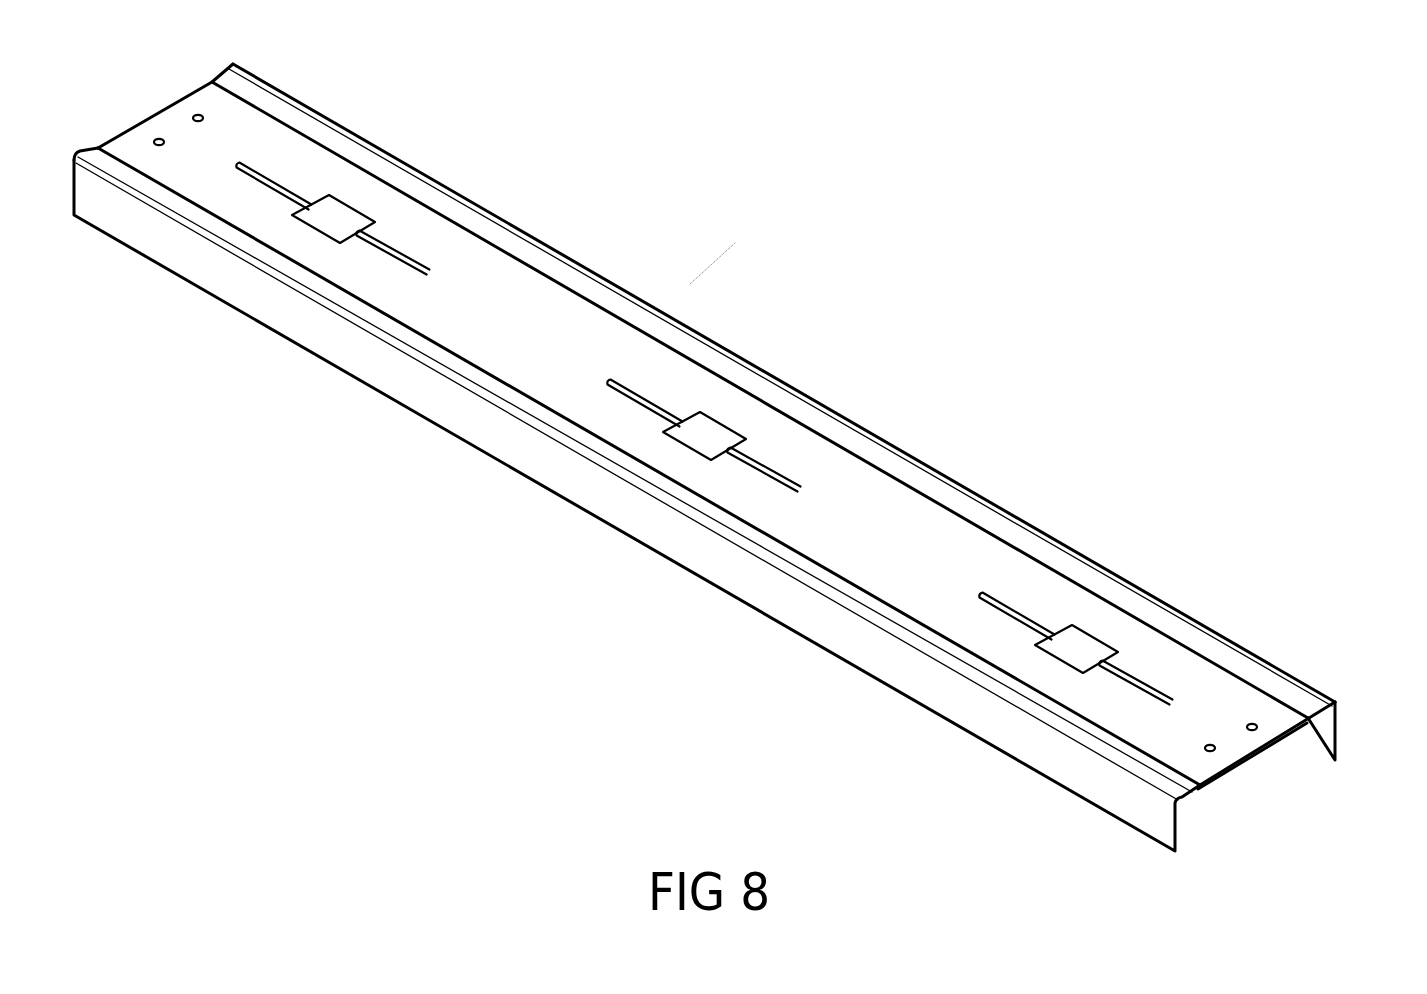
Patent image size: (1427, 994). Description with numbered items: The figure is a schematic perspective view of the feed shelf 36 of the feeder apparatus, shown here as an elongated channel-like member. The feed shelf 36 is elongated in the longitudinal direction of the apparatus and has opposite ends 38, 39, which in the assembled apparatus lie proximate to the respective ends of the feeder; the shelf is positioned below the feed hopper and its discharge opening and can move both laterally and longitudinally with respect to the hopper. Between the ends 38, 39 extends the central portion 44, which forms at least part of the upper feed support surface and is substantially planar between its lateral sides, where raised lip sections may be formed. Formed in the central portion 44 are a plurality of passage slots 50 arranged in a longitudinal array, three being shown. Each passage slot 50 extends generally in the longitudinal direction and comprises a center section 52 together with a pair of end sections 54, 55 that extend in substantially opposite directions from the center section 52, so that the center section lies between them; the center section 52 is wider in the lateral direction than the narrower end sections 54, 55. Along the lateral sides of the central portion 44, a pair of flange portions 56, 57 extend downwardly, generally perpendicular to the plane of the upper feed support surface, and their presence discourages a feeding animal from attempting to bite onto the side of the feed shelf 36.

The end of feed shelf 38 is at (170, 106).
The central portion 44 is at (483, 302).
The feed shelf 36 is at (728, 253).
The center section 52 is at (707, 412).
The passage slot 50 is at (752, 422).
The end section 54 is at (639, 400).
The end section 55 is at (755, 466).
The end of feed shelf 39 is at (1272, 738).
The flange portion 57 is at (1329, 721).
The flange portion 56 is at (1177, 823).